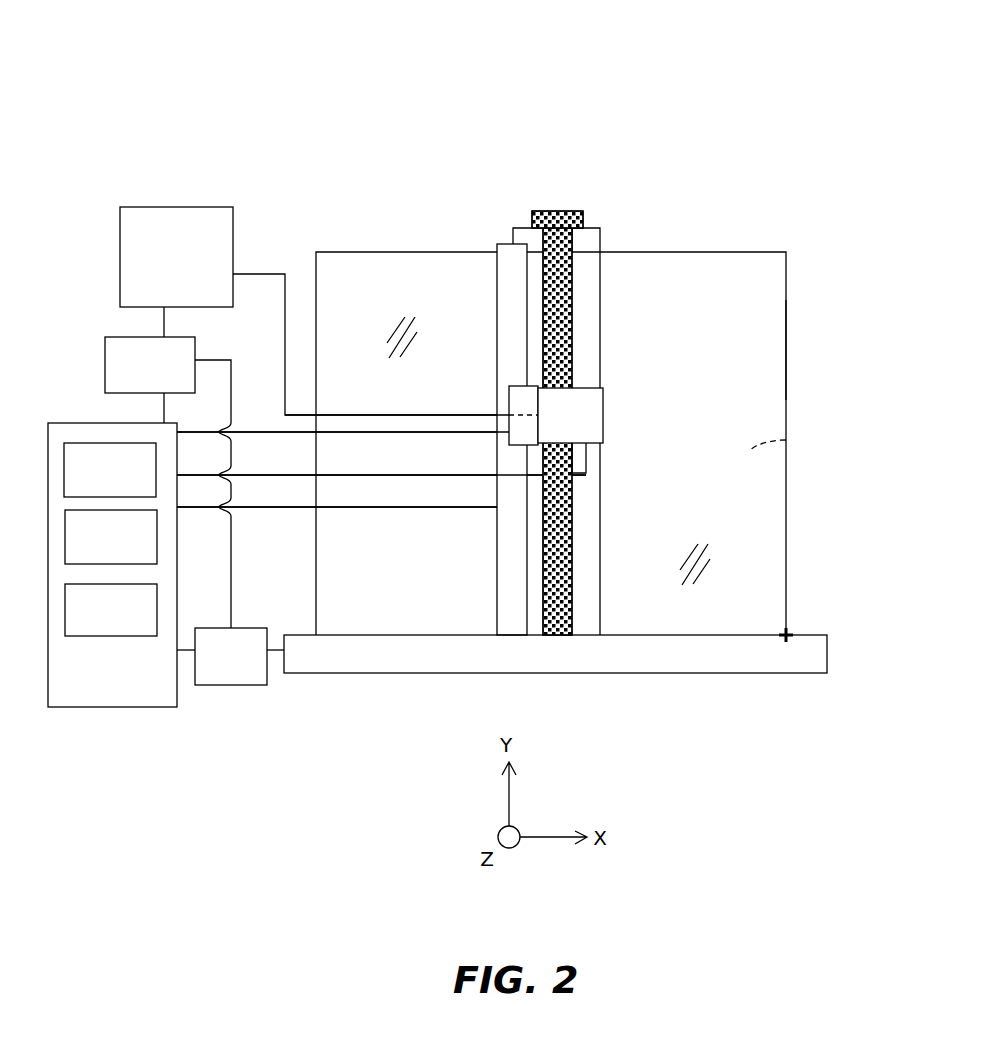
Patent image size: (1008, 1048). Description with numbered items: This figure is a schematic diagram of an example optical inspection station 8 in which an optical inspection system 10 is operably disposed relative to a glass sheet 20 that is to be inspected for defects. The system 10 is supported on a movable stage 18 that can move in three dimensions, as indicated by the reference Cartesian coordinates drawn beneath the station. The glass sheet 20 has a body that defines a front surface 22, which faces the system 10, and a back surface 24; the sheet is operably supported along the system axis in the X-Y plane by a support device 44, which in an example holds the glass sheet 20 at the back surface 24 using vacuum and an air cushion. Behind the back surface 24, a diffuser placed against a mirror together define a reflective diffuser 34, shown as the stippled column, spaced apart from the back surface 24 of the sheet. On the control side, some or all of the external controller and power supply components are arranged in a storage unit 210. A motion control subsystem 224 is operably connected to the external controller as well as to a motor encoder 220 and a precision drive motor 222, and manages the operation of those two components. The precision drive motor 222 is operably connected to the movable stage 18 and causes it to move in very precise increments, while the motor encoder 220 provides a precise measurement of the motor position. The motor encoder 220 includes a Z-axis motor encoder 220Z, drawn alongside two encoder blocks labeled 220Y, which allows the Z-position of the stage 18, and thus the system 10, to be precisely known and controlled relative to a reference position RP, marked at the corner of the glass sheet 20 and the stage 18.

The optical inspection station 8 is at (192, 67).
The optical inspection system 10 is at (603, 411).
The movable stage 18 is at (387, 669).
The glass sheet 20 is at (690, 251).
The front surface 22 is at (756, 347).
The back surface 24 is at (786, 440).
The reflective diffuser 34 is at (553, 211).
The support device 44 is at (522, 228).
The storage unit 210 is at (152, 271).
The motor encoder 220 is at (88, 689).
The Y drive 220Y is at (80, 484).
The Z-axis motor encoder 220Z is at (81, 624).
The precision drive motor 222 is at (206, 671).
The motion control subsystem 224 is at (125, 379).
The reference position RP is at (788, 638).